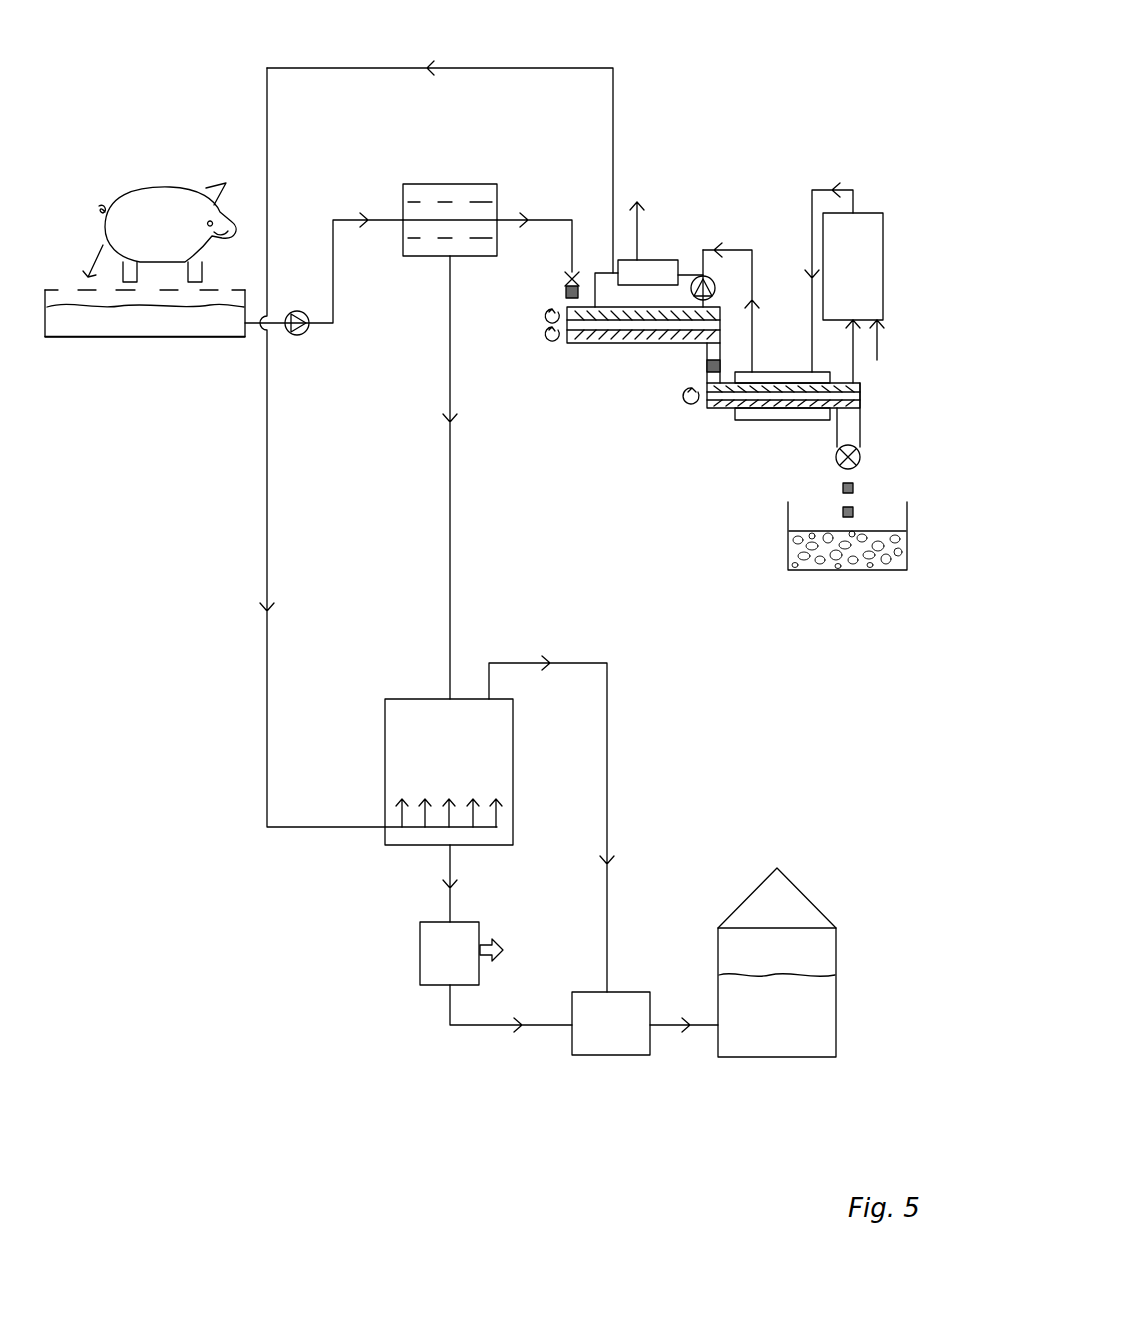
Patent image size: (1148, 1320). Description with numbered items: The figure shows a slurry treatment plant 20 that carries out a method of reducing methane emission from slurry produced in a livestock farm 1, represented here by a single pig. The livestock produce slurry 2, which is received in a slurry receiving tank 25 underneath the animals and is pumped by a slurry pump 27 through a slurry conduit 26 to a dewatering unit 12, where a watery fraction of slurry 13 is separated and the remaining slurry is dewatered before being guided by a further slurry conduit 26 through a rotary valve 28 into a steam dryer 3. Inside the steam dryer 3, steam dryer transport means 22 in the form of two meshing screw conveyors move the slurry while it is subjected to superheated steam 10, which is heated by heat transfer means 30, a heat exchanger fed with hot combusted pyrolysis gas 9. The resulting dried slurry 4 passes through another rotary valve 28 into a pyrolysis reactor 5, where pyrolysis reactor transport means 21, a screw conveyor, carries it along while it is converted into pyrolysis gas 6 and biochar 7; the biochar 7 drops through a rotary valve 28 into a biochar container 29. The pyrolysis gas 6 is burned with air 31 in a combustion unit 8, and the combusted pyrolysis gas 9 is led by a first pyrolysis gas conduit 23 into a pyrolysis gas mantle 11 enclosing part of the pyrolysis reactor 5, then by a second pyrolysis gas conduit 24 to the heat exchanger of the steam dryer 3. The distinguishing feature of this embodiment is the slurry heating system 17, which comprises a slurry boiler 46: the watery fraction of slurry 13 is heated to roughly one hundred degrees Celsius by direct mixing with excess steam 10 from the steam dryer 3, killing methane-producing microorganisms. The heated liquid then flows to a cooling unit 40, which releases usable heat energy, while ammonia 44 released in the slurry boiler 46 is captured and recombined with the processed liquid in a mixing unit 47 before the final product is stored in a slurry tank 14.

The livestock farm 1 is at (83, 126).
The slurry 2 is at (67, 340).
The steam dryer 3 is at (648, 370).
The dried slurry 4 is at (722, 357).
The pyrolysis reactor 5 is at (762, 431).
The pyrolysis gas 6 is at (861, 385).
The biochar 7 is at (856, 488).
The combustion unit 8 is at (884, 272).
The combusted pyrolysis gas 9 is at (833, 277).
The steam 10 is at (557, 68).
The pyrolysis gas mantle 11 is at (789, 372).
The dewatering unit 12 is at (447, 184).
The watery fraction of slurry 13 is at (450, 512).
The slurry tank 14 is at (836, 1007).
The slurry heating system 17 is at (634, 889).
The slurry treatment plant 20 is at (878, 206).
The pyrolysis reactor transport means 21 is at (705, 409).
The steam dryer transport means 22 is at (575, 346).
The first pyrolysis gas conduit 23 is at (855, 198).
The second pyrolysis gas conduit 24 is at (745, 250).
The slurry receiving tank 25 is at (147, 340).
The slurry conduit 26 is at (383, 218).
The slurry pump 27 is at (297, 336).
The rotary valve 28 is at (566, 290).
The biochar container 29 is at (788, 542).
The heat transfer means 30 is at (650, 260).
The air 31 is at (878, 341).
The cooling unit 40 is at (420, 948).
The ammonia 44 is at (607, 730).
The slurry boiler 46 is at (513, 770).
The mixing unit 47 is at (605, 1058).